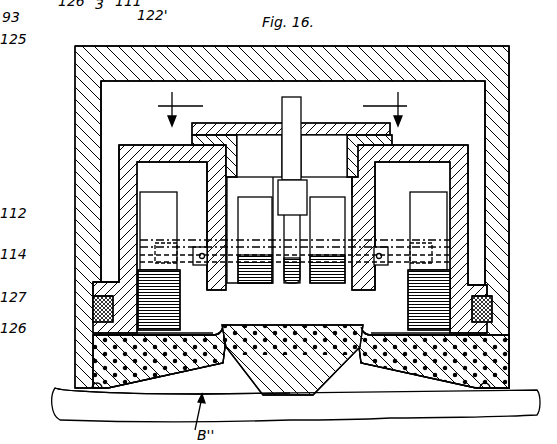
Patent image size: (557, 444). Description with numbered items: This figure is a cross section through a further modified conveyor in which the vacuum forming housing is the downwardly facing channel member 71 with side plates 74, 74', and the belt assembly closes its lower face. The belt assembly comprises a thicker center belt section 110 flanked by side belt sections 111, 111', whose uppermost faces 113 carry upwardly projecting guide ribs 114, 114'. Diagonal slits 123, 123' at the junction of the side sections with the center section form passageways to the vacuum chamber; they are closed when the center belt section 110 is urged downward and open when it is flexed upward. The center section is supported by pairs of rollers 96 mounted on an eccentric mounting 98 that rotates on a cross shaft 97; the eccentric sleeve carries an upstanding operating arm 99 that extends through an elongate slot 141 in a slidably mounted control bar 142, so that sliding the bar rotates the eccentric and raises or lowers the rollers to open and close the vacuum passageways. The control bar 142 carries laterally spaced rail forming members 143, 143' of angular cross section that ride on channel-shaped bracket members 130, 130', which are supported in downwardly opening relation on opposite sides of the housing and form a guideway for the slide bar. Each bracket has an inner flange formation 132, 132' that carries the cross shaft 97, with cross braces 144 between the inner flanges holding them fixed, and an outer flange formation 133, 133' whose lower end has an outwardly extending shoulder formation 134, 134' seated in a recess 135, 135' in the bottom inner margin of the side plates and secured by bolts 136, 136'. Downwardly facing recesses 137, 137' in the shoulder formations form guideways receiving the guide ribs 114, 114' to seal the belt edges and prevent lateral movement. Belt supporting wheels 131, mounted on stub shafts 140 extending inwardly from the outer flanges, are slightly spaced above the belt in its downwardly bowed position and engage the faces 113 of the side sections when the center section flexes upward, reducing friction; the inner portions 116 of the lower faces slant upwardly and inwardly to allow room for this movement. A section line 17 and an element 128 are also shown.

The channel member 71 is at (509, 58).
The side plate 74 is at (512, 217).
The side plate 74' is at (67, 217).
The section line 17 is at (283, 109).
The control bar 142 is at (238, 123).
The elongate slot 141 is at (305, 131).
The rail forming member 143 is at (348, 156).
The rail forming member 143' is at (234, 156).
The operating arm 99 is at (282, 162).
The roller 96 is at (324, 156).
The eccentric mounting 98 is at (232, 240).
The bracket member 130 is at (419, 227).
The bracket member 130' is at (159, 225).
The belt supporting wheel 131 is at (157, 197).
The inner flange formation 132 is at (386, 226).
The inner flange formation 132' is at (189, 226).
The outer flange formation 133 is at (505, 215).
The outer flange formation 133' is at (82, 213).
The shoulder formation 134 is at (505, 257).
The shoulder formation 134' is at (81, 253).
The recess 135 is at (515, 275).
The recess 135' is at (66, 273).
The bolt 136 is at (507, 290).
The bolt 136' is at (77, 285).
The downwardly facing recess 137 is at (508, 309).
The downwardly facing recess 137' is at (78, 309).
The cross shaft 97 is at (195, 247).
The cross brace 144 is at (348, 193).
The stub shaft 140 is at (178, 298).
The inner portion 116 is at (294, 325).
The uppermost face 113 is at (197, 340).
The slit 123 is at (362, 320).
The slit 123' is at (229, 319).
The guide rib 114 is at (451, 357).
The guide rib 114' is at (132, 357).
The center belt section 110 is at (288, 390).
The side belt section 111 is at (296, 395).
The side belt section 111' is at (172, 395).
The pin 128 is at (65, 386).